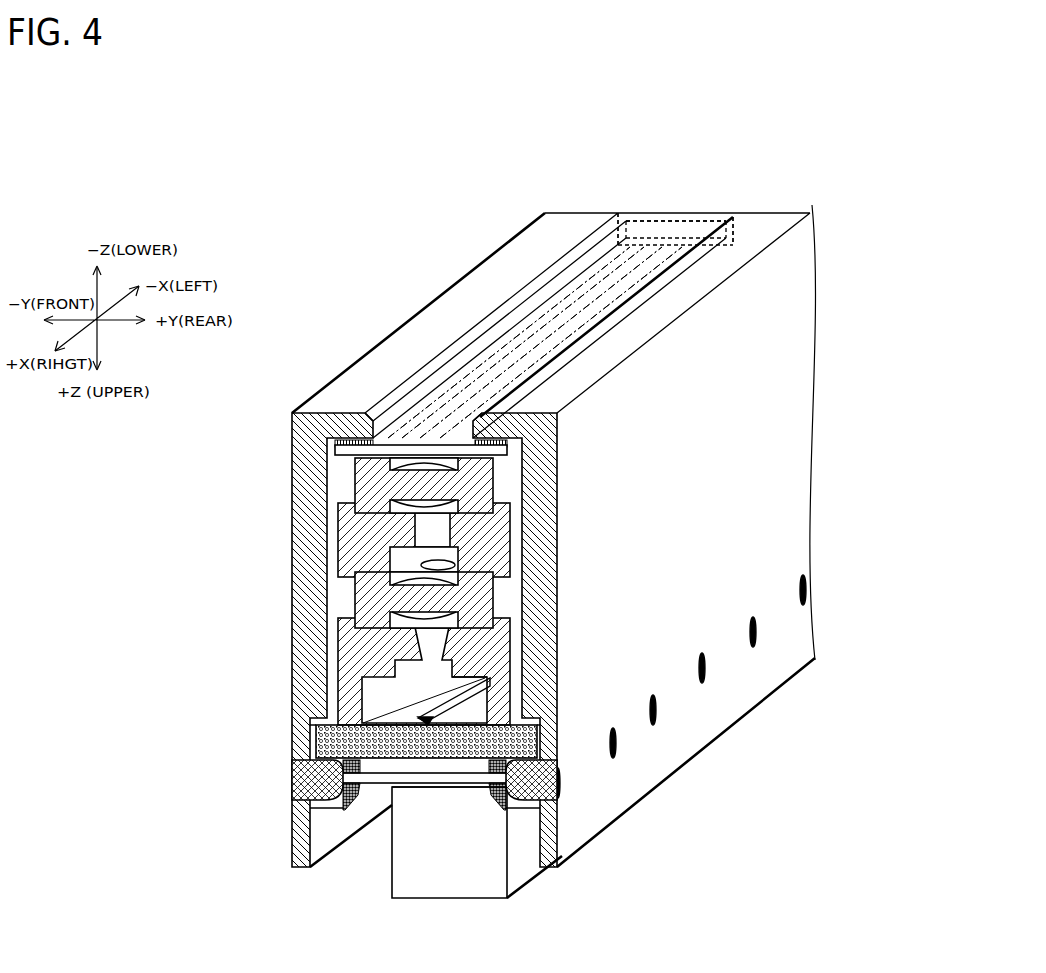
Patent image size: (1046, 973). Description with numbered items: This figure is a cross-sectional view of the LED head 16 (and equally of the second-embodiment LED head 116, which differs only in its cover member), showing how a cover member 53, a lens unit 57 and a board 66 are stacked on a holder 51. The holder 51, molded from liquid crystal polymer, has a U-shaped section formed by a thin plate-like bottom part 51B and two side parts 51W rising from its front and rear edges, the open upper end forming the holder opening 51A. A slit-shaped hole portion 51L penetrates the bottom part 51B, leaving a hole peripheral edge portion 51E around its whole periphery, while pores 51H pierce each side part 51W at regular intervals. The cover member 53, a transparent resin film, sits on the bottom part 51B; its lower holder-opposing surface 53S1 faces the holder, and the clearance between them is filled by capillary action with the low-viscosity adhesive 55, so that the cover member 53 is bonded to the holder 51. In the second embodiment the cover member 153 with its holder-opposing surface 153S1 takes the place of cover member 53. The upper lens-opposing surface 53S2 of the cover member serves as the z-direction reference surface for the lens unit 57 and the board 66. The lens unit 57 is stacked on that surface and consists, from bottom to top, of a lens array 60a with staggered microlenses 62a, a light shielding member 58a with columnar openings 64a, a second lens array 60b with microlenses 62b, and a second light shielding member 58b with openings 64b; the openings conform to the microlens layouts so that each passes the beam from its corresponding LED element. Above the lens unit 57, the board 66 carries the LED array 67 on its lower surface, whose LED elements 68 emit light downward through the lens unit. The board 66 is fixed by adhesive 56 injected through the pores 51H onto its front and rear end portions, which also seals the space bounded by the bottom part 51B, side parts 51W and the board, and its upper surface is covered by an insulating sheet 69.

The LED head 16 is at (115, 192).
The LED head 116 is at (479, 528).
The holder 51 is at (570, 528).
The holder opening 51A is at (365, 862).
The bottom part 51B is at (356, 416).
The hole peripheral edge portion 51E is at (592, 243).
The pores 51H is at (560, 800).
The hole portion 51L is at (670, 222).
The side parts 51W is at (292, 440).
The cover member 53 is at (535, 335).
The cover member 153 is at (478, 323).
The holder-opposing surface 53S1 is at (395, 385).
The holder-opposing surface 153S1 is at (445, 342).
The lens-opposing surface 53S2 is at (292, 466).
The adhesive 55 is at (410, 380).
The adhesive 56 is at (292, 797).
The lens unit 57 is at (517, 573).
The light shielding member 58a is at (545, 544).
The light shielding member 58b is at (545, 647).
The lens array 60a is at (545, 467).
The lens array 60b is at (545, 544).
The microlenses 62a is at (470, 470).
The microlenses 62b is at (500, 570).
The openings 64a is at (507, 507).
The openings 64b is at (497, 595).
The board 66 is at (292, 757).
The LED array 67 is at (292, 860).
The LED elements 68 is at (343, 828).
The insulating sheet 69 is at (453, 800).